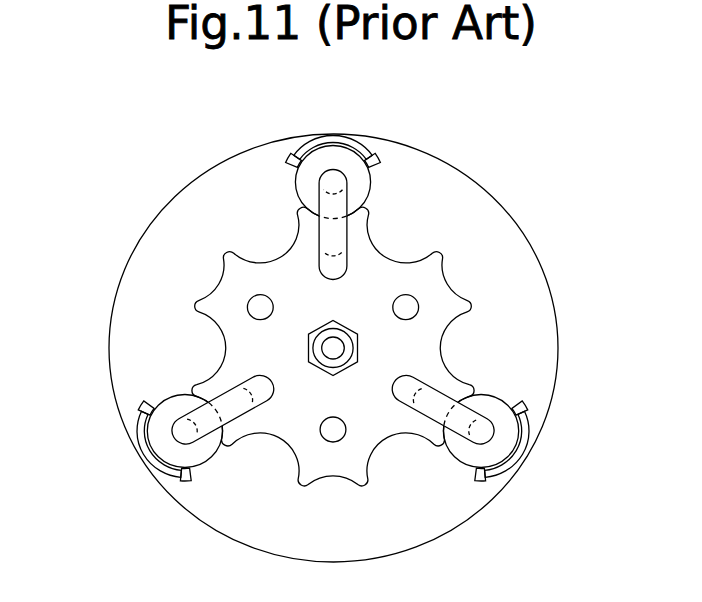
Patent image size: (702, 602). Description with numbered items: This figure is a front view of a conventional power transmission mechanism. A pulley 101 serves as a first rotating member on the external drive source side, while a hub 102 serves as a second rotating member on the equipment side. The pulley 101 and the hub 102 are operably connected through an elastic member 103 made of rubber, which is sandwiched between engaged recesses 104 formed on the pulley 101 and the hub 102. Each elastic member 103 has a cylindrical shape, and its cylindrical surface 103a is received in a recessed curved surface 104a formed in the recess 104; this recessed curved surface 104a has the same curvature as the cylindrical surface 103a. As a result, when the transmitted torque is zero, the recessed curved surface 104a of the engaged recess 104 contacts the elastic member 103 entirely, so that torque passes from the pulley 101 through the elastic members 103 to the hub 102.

The pulley 101 is at (109, 350).
The hub 102 is at (452, 277).
The elastic member 103 is at (366, 187).
The cylindrical surface 103a is at (361, 150).
The engaged recess 104 is at (333, 146).
The recessed curved surface 104a is at (312, 160).